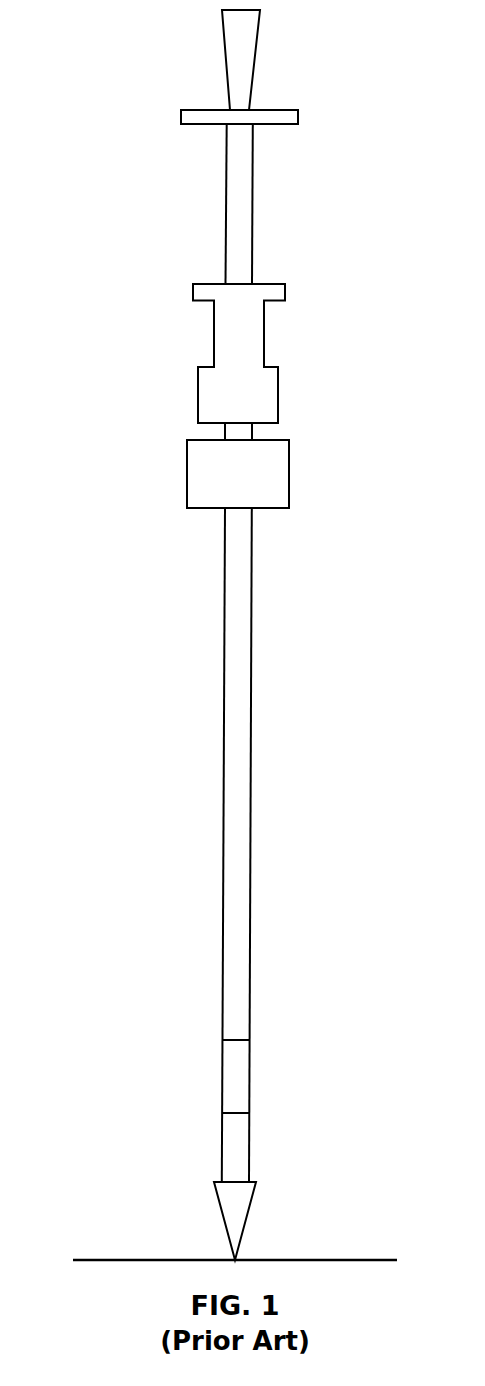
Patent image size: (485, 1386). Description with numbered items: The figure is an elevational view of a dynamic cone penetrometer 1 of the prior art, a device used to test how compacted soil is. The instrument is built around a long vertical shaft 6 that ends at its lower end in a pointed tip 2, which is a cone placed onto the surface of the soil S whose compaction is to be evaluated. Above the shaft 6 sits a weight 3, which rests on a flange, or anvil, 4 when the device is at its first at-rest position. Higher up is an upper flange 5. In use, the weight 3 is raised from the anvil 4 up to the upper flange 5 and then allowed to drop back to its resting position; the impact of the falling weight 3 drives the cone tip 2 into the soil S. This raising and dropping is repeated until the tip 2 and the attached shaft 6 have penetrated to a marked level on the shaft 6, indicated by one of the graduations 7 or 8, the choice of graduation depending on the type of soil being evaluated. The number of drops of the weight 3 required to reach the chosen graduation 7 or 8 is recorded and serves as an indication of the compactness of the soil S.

The dynamic cone penetrometer 1 is at (327, 364).
The tip 2 is at (238, 1207).
The weight 3 is at (223, 337).
The flange, or anvil 4 is at (200, 475).
The upper flange 5 is at (298, 117).
The shaft 6 is at (237, 652).
The graduation 7 is at (220, 1114).
The graduation 8 is at (245, 1041).
The soil S is at (147, 1260).